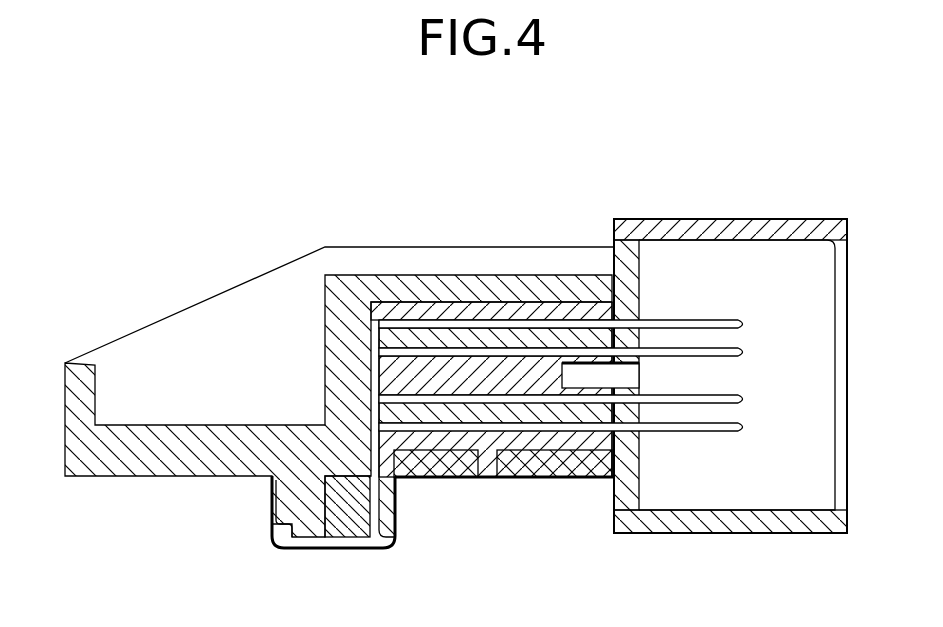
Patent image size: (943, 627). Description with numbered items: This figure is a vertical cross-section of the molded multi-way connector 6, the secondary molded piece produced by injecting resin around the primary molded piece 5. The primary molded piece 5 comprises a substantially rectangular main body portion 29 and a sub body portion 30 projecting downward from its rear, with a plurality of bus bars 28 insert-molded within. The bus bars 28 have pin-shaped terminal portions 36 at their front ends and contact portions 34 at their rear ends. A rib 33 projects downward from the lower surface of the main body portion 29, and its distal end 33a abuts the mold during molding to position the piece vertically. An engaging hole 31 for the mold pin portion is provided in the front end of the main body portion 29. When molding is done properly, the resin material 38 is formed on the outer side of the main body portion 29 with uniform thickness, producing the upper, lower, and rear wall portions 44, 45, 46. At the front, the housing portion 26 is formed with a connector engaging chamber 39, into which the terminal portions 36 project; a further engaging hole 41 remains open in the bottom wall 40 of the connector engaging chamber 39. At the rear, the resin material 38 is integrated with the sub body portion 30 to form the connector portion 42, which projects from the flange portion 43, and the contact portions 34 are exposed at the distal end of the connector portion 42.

The molded multi-way connector 6 is at (585, 226).
The housing portion 26 is at (802, 220).
The connector engaging chamber 39 is at (743, 260).
The upper wall portion 44 is at (401, 275).
The primary molded piece 5 is at (463, 296).
The main body portion 29 is at (539, 300).
The rear wall portion 46 is at (337, 342).
The engaging hole 41 is at (628, 378).
The engaging hole 31 is at (583, 376).
The terminal portions 36 is at (716, 428).
The bottom wall 40 is at (634, 456).
The bus bars 28 is at (588, 428).
The rib 33 is at (503, 458).
The distal end of rib 33a is at (488, 478).
The lower wall portion 45 is at (432, 470).
The sub body portion 30 is at (350, 527).
The contact portions 34 is at (303, 548).
The connector portion 42 is at (270, 505).
The resin material 38 is at (262, 491).
The flange portion 43 is at (102, 478).